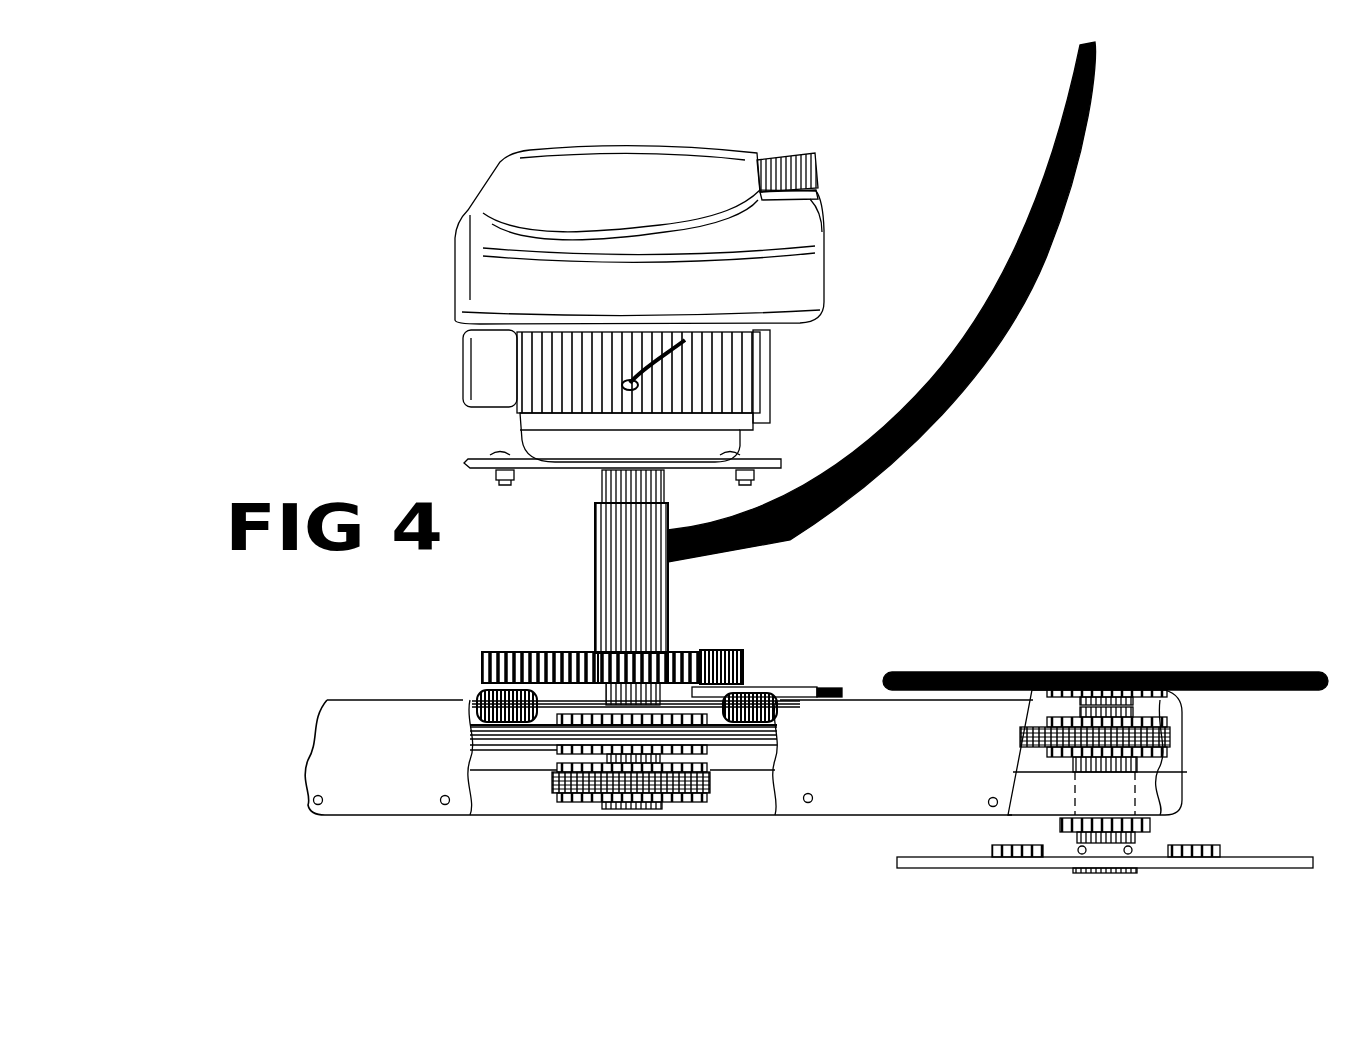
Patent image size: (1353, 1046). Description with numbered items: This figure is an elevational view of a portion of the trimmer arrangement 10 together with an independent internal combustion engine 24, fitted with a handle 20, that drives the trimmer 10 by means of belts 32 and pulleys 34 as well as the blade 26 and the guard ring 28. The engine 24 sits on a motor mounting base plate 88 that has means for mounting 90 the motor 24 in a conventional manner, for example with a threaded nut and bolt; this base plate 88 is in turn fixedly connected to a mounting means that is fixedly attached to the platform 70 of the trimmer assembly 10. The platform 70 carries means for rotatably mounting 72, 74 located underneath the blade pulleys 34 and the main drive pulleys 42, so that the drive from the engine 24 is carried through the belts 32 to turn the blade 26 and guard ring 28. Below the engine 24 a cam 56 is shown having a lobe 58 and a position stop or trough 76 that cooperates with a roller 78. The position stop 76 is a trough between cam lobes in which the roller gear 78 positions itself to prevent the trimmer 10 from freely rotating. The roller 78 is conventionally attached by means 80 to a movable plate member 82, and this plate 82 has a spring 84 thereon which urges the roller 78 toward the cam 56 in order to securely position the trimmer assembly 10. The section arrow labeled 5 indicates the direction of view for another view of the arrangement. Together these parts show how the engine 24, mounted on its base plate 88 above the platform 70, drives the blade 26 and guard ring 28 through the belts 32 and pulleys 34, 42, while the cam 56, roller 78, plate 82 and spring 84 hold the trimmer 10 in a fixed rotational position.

The trimmer arrangement 10 is at (262, 660).
The section view direction 5 is at (448, 632).
The handle 20 is at (1044, 256).
The internal combustion engine 24 is at (660, 172).
The blade 26 is at (1293, 870).
The guard ring 28 is at (1247, 672).
The belts 32 is at (742, 748).
The blade pulleys 34 is at (1158, 738).
The main drive pulleys 42 is at (560, 755).
The cam 56 is at (672, 653).
The lobe 58 is at (500, 653).
The platform 70 is at (375, 783).
The means for rotatably mounting 72 is at (1167, 693).
The means for rotatably mounting 74 is at (640, 718).
The position stop 76 is at (590, 653).
The roller 78 is at (743, 663).
The attaching means 80 is at (723, 653).
The movable plate member 82 is at (787, 687).
The spring 84 is at (780, 717).
The motor mounting base plate 88 is at (770, 458).
The means for mounting 90 is at (743, 483).